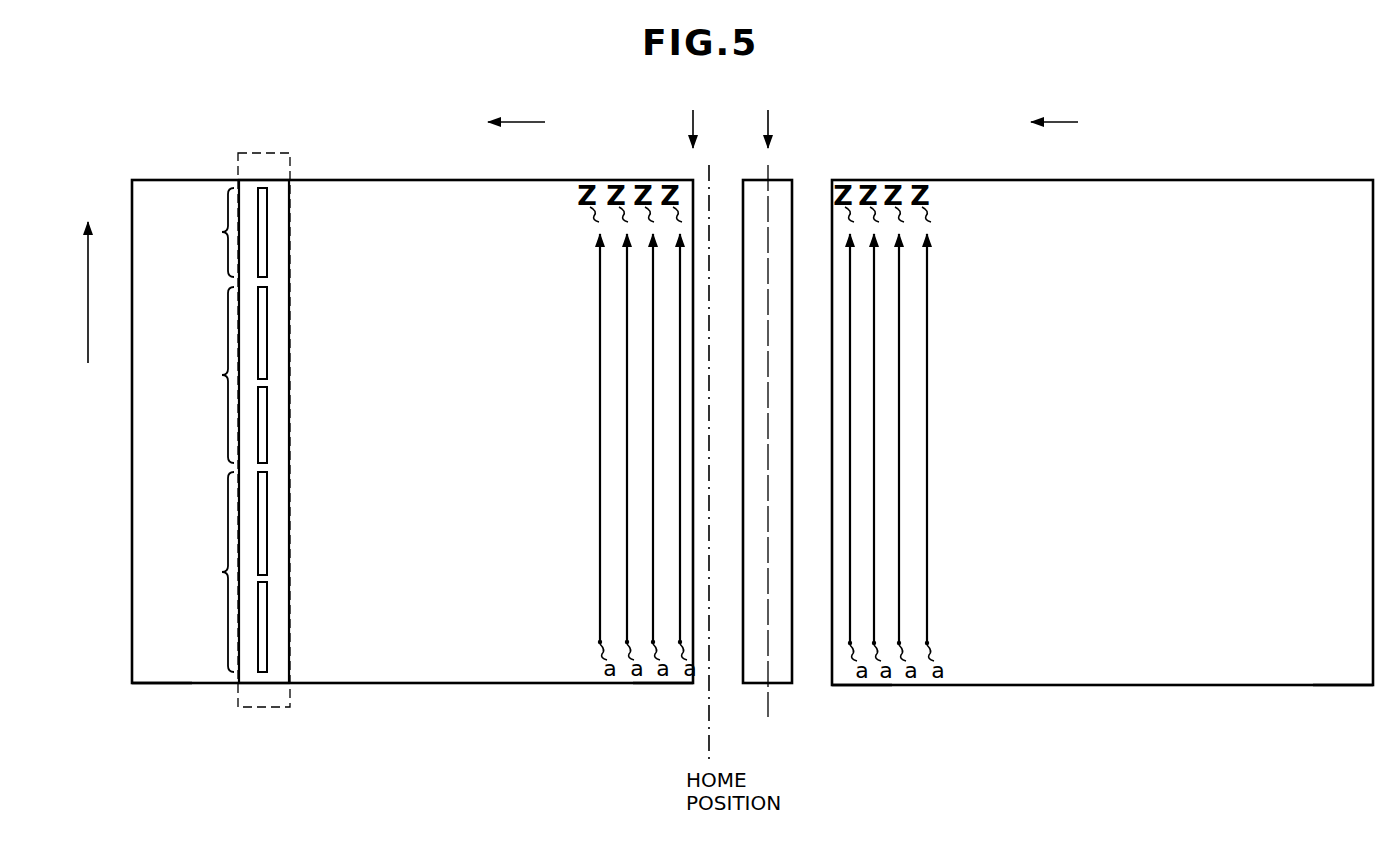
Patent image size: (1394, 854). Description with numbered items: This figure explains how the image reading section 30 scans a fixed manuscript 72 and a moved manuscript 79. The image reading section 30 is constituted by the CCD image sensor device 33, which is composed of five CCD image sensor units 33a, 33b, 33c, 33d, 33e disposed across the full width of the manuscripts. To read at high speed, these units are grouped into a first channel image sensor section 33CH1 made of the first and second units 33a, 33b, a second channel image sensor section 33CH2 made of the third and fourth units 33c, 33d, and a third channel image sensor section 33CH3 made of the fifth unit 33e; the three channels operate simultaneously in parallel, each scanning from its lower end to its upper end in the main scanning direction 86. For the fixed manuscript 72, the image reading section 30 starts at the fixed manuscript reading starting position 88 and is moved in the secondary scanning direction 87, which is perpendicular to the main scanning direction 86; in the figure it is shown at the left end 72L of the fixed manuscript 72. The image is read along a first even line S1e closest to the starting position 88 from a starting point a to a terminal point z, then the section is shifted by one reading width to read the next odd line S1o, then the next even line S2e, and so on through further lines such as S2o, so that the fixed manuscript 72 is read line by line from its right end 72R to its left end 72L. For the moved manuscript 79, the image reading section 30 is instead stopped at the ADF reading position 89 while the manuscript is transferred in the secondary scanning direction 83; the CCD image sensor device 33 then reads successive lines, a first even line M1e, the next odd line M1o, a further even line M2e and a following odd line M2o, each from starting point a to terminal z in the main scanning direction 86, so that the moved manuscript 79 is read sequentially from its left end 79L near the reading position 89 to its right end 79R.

The fixed manuscript 72 is at (419, 655).
The left end of the fixed manuscript 72L is at (166, 683).
The right end of the fixed manuscript 72R is at (667, 683).
The image reading section 30 is at (291, 700).
The CCD image sensor device 33 is at (262, 693).
The first CCD image sensor unit 33a is at (267, 620).
The second CCD image sensor unit 33b is at (267, 540).
The third CCD image sensor unit 33c is at (267, 420).
The fourth CCD image sensor unit 33d is at (267, 332).
The fifth CCD image sensor unit 33e is at (267, 235).
The first channel image sensor section 33CH1 is at (185, 572).
The second channel image sensor section 33CH2 is at (185, 375).
The third channel image sensor section 33CH3 is at (185, 232).
The main scanning direction 86 is at (88, 272).
The first direction (secondary scanning direction for fixed manuscript) 87 is at (516, 122).
The starting position for reading the fixed manuscript 88 is at (692, 120).
The ADF reading position 89 is at (768, 120).
The moved manuscript 79 is at (1113, 675).
The left end of the moved manuscript 79L is at (862, 685).
The right end of the moved manuscript 79R is at (1343, 714).
The first direction (secondary scanning direction for moved manuscript) 83 is at (1050, 122).
The odd line of the fixed manuscript S2o is at (584, 490).
The second even line of the fixed manuscript S2e is at (613, 436).
The first odd line of the fixed manuscript S1o is at (640, 437).
The first even line of the fixed manuscript S1e is at (667, 437).
The first even line of the moved manuscript M1e is at (857, 429).
The first odd line of the moved manuscript M1o is at (882, 430).
The second even line of the moved manuscript M2e is at (909, 429).
The second odd line of the moved manuscript M2o is at (949, 430).